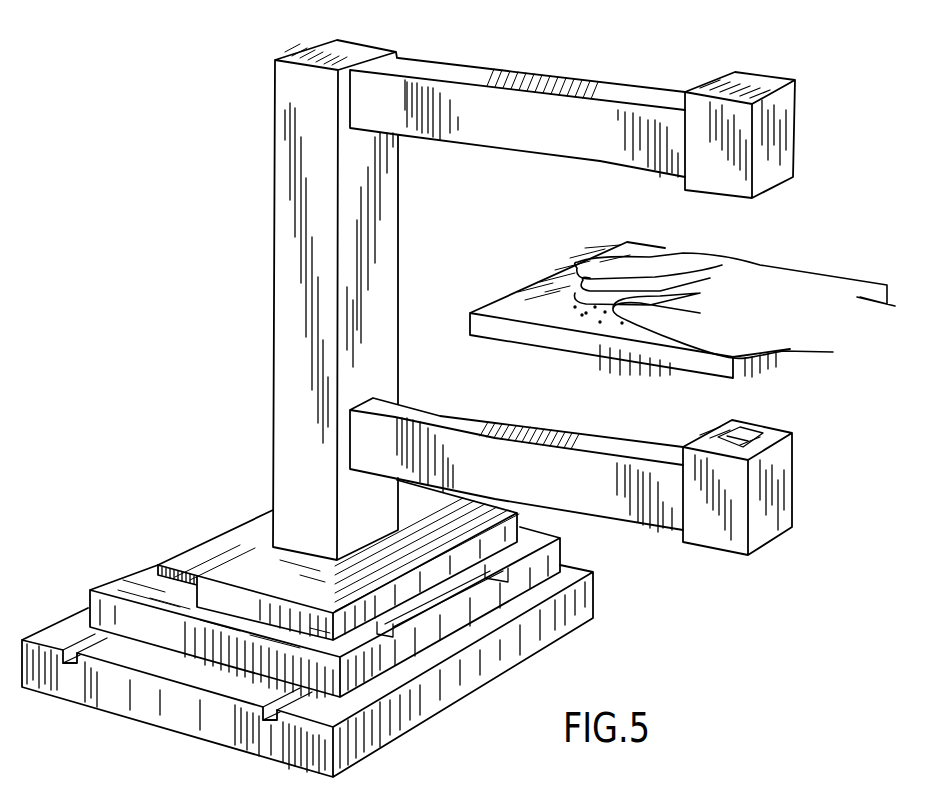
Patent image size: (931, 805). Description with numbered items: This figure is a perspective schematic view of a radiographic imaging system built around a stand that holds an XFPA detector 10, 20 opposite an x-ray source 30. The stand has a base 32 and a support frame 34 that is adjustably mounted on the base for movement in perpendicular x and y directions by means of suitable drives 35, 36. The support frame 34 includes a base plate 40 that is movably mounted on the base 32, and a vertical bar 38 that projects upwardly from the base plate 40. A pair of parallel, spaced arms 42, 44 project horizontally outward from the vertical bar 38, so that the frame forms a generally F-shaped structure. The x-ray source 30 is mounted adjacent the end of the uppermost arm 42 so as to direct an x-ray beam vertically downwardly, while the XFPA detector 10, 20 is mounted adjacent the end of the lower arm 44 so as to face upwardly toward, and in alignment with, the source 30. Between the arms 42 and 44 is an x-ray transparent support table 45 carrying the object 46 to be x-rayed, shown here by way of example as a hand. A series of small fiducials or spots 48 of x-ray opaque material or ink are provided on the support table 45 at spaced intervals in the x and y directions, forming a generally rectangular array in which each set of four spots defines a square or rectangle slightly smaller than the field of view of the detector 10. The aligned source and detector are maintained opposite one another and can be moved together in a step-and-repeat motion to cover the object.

The XFPA detector 10 is at (785, 479).
The XFPA detector 20 is at (757, 432).
The x-ray source 30 is at (765, 75).
The base 32 is at (578, 630).
The support frame 34 is at (258, 346).
The drive 35 is at (157, 565).
The drive 36 is at (263, 708).
The vertical bar 38 is at (288, 240).
The base plate 40 is at (520, 523).
The uppermost arm 42 is at (557, 82).
The lower arm 44 is at (553, 433).
The x-ray transparent support table 45 is at (577, 267).
The object 46 is at (740, 272).
The fiducials or spots 48 is at (600, 320).